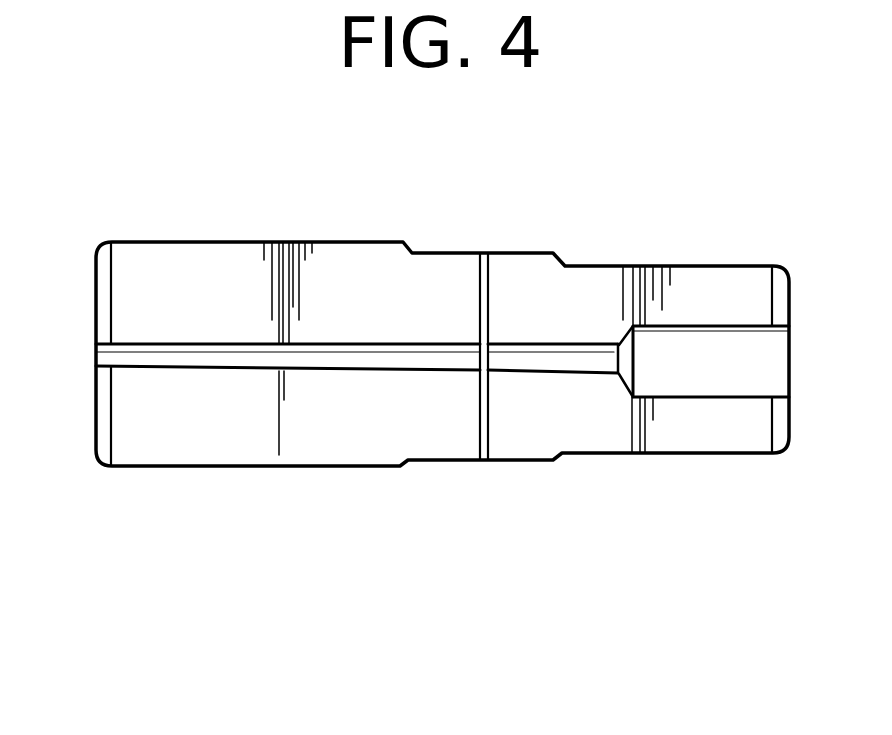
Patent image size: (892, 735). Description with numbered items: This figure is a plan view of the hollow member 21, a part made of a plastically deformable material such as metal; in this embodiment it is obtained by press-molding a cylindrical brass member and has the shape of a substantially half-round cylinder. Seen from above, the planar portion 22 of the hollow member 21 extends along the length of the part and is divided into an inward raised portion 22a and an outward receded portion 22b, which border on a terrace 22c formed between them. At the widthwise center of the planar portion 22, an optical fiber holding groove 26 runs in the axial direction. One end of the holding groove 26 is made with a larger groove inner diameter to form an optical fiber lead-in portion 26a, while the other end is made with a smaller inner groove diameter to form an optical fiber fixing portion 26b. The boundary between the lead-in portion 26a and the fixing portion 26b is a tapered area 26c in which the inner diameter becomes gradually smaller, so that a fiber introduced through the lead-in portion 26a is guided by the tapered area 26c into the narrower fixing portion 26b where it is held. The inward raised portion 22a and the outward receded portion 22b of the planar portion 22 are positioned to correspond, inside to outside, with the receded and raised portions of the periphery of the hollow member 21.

The hollow member 21 is at (167, 230).
The planar portion 22 is at (363, 430).
The inward raised portion 22a is at (602, 425).
The outward receded portion 22b is at (218, 438).
The terrace 22c is at (495, 290).
The optical fiber holding groove 26 is at (338, 333).
The optical fiber lead-in portion 26a is at (698, 348).
The optical fiber fixing portion 26b is at (228, 344).
The tapered area 26c is at (625, 378).